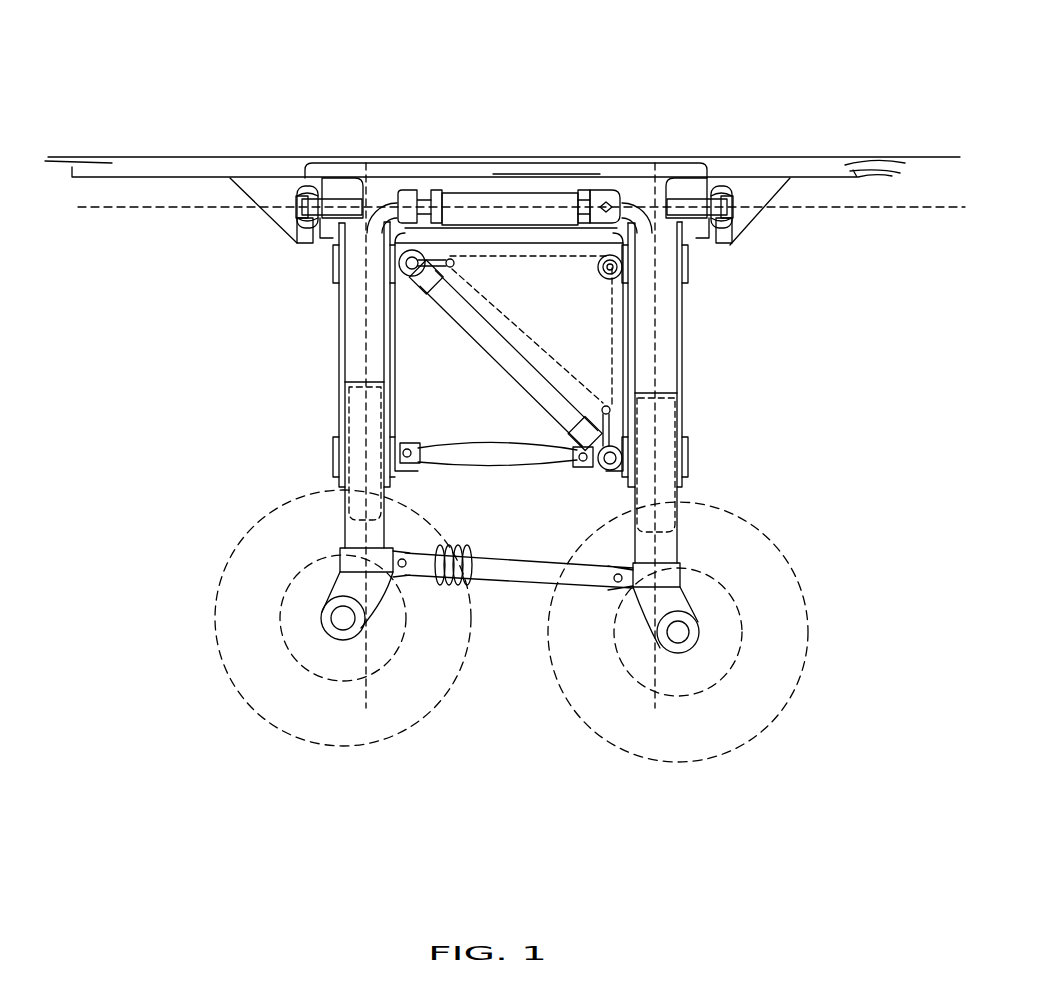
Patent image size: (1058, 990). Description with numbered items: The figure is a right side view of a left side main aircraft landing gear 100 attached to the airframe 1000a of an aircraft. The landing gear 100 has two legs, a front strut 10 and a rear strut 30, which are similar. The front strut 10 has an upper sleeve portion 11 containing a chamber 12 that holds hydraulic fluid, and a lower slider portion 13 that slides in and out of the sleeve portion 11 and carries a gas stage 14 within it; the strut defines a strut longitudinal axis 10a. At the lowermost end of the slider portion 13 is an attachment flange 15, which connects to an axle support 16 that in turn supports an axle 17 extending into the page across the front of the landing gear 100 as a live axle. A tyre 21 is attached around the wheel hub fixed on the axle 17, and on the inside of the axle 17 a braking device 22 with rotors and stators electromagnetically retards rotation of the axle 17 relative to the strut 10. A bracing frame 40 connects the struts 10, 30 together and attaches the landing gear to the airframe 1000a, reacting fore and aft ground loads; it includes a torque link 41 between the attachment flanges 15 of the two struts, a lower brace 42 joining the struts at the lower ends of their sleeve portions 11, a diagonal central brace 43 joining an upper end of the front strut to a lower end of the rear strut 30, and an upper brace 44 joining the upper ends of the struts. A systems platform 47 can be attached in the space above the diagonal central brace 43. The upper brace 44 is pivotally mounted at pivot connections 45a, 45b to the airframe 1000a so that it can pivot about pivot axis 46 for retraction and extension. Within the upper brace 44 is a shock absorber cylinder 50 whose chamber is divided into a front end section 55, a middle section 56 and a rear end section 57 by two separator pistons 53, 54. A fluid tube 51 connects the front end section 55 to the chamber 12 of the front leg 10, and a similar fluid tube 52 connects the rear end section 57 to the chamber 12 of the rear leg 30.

The airframe 1000a is at (158, 160).
The pivot connection 45a is at (292, 195).
The pivot connection 45b is at (731, 197).
The upper brace 44 is at (338, 182).
The fluid tube 52 is at (627, 205).
The fluid tube 51 is at (386, 210).
The front end section 55 is at (426, 197).
The separator piston 53 is at (443, 200).
The middle section 56 is at (479, 208).
The separator piston 54 is at (590, 197).
The rear end section 57 is at (597, 200).
The shock absorber cylinder 50 is at (552, 133).
The aircraft landing gear 100 is at (755, 117).
The pivot axis 46 is at (105, 208).
The upper sleeve portion 11 is at (336, 266).
The chamber 12 is at (352, 298).
The strut longitudinal axis 10a is at (352, 331).
The gas stage 14 is at (352, 398).
The lower slider portion 13 is at (340, 505).
The front strut 10 is at (190, 462).
The attachment flange 15 is at (395, 565).
The axle support 16 is at (348, 587).
The axle 17 is at (345, 617).
The tyre 21 is at (235, 665).
The braking device 22 is at (327, 658).
The torque link 41 is at (487, 565).
The bracing frame 40 is at (507, 622).
The lower brace 42 is at (445, 456).
The diagonal central brace 43 is at (480, 337).
The systems platform 47 is at (569, 314).
The rear strut 30 is at (722, 329).